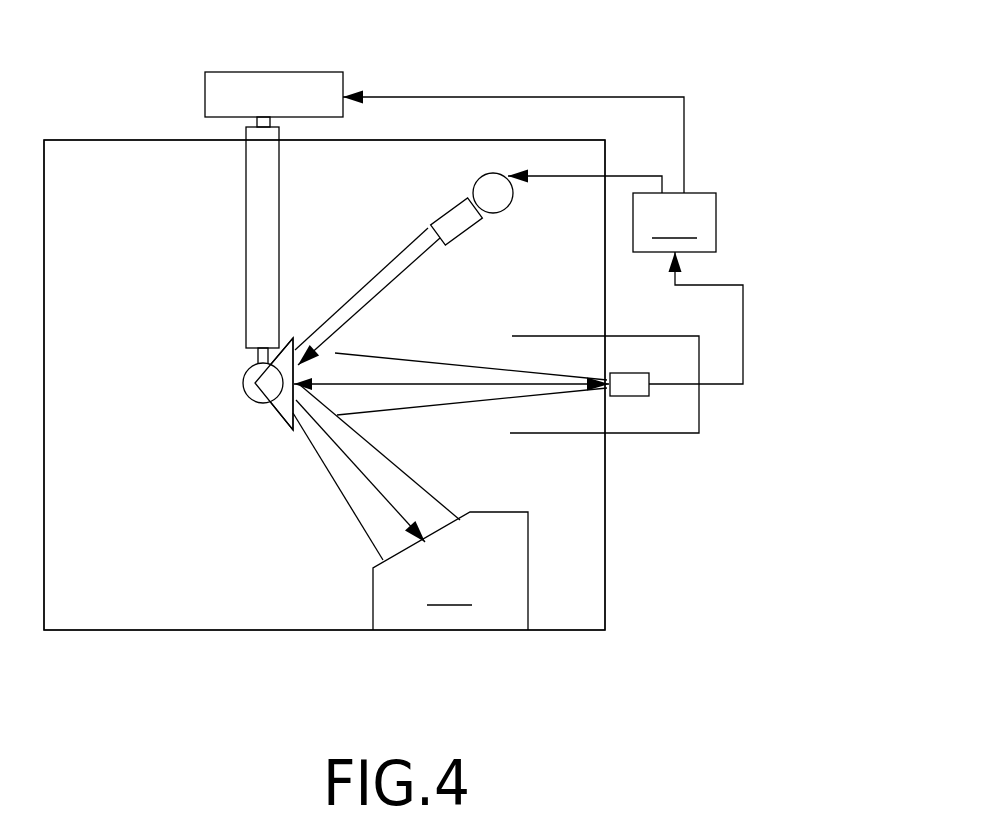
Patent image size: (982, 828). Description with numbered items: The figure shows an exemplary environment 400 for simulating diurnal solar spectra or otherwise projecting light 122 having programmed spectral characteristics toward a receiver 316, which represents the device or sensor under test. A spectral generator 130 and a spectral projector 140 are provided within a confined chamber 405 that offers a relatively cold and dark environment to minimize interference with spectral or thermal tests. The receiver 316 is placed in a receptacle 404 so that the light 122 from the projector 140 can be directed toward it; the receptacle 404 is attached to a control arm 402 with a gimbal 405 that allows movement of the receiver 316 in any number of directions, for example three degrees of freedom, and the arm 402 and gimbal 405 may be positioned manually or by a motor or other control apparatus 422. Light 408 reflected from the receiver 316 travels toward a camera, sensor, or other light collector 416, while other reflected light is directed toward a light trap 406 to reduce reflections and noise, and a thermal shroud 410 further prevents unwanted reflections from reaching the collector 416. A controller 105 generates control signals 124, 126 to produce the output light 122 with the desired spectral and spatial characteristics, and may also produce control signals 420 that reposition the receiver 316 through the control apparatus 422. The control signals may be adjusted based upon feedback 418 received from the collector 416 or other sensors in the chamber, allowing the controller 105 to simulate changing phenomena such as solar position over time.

The environment 400 is at (752, 95).
The control arm 402 is at (246, 241).
The receptacle 404 is at (284, 410).
The chamber 405 is at (243, 386).
The light trap 406 is at (450, 571).
The reflected light 408 is at (500, 358).
The thermal shroud 410 is at (512, 336).
The light collector 416 is at (640, 392).
The feedback 418 is at (743, 325).
The control signals 420 is at (410, 97).
The control apparatus 422 is at (275, 72).
The controller 105 is at (674, 222).
The light 122 is at (402, 272).
The control signal 124 is at (592, 145).
The control signal 126 is at (643, 176).
The spectral generator 130 is at (507, 212).
The spectral projector 140 is at (457, 217).
The receiver 316 is at (322, 390).